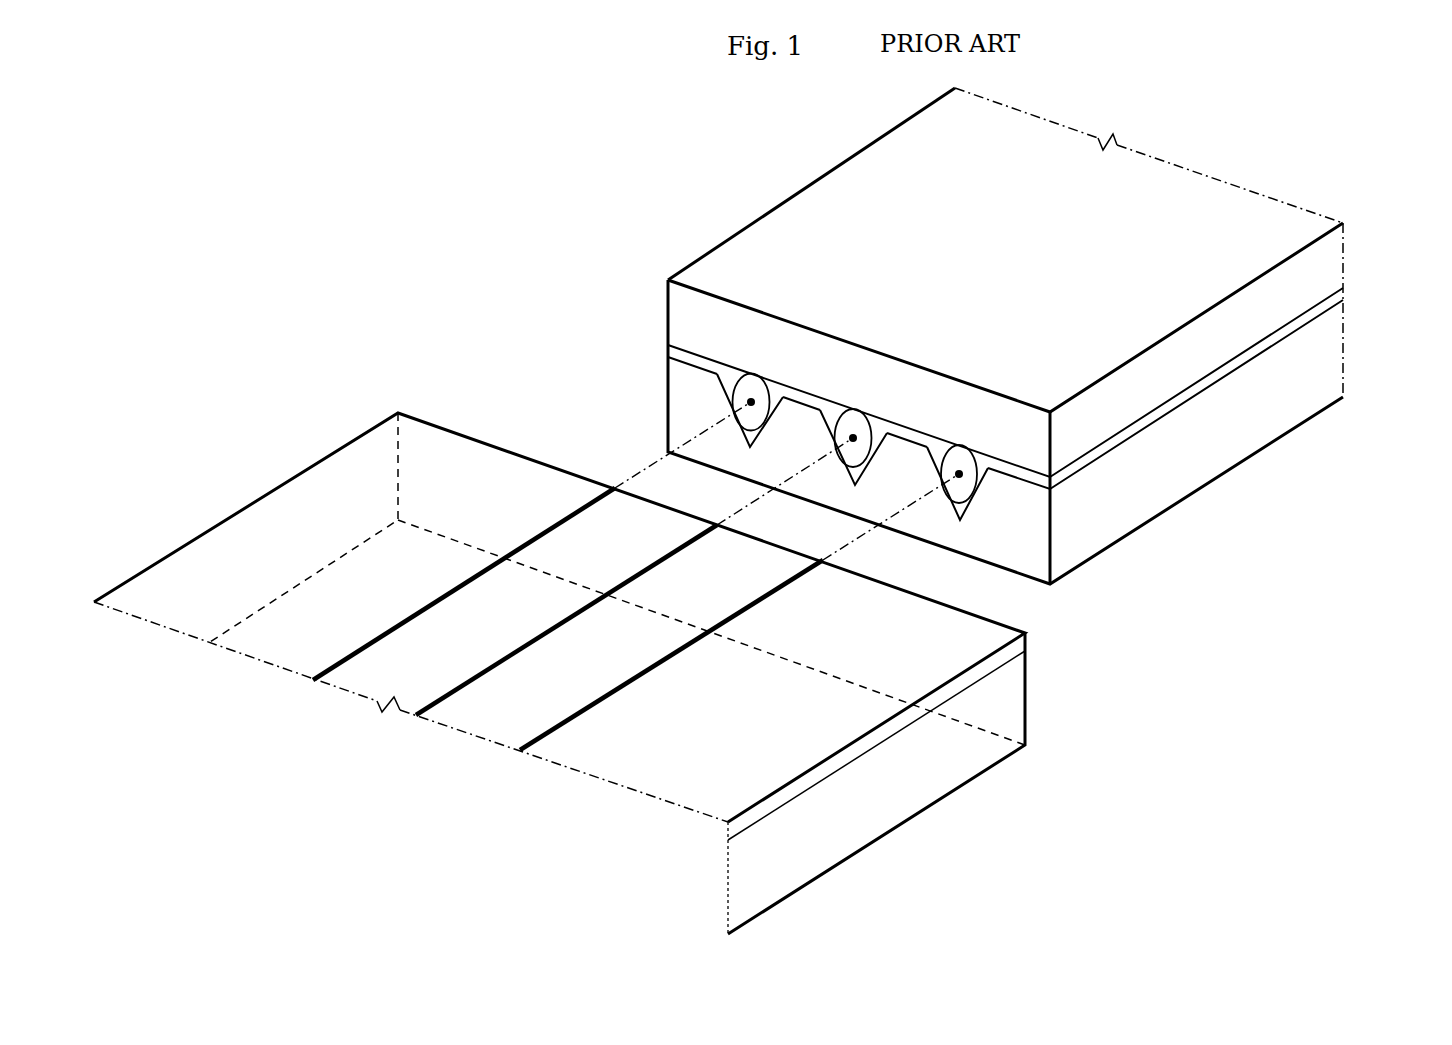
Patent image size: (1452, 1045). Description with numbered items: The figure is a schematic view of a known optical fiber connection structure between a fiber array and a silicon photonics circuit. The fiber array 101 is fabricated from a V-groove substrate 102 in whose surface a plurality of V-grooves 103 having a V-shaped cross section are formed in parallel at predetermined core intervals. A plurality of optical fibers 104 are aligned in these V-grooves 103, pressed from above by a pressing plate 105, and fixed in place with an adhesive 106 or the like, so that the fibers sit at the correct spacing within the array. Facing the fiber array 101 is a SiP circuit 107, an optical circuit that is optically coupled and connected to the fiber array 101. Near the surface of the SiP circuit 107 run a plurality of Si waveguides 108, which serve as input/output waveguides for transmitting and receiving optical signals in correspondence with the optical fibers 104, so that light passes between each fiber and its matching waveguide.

The fiber array 101 is at (811, 159).
The V-groove substrate 102 is at (1333, 372).
The V-grooves 103 is at (960, 519).
The optical fibers 104 is at (753, 375).
The pressing plate 105 is at (1340, 258).
The adhesive 106 is at (1340, 300).
The SiP circuit 107 is at (910, 818).
The Si waveguides 108 is at (523, 545).